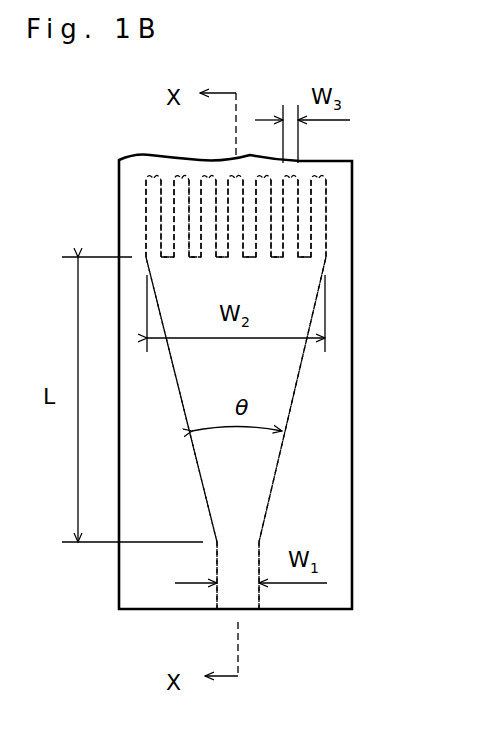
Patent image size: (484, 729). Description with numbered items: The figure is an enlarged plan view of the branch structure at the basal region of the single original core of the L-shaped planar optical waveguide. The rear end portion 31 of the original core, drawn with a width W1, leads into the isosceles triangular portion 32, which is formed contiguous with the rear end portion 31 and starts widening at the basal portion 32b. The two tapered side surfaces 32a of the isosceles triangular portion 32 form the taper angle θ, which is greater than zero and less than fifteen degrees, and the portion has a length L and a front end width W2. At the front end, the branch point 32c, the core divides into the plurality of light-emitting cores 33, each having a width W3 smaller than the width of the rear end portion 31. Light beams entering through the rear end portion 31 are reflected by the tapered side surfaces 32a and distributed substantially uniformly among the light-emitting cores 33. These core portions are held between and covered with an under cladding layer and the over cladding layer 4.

The over cladding layer 4 is at (336, 457).
The rear end portion 31 is at (243, 598).
The isosceles triangular portion 32 is at (287, 378).
The tapered side surfaces 32a is at (290, 410).
The basal portion 32b is at (259, 542).
The branch point 32c is at (322, 255).
The light-emitting cores 33 is at (298, 190).